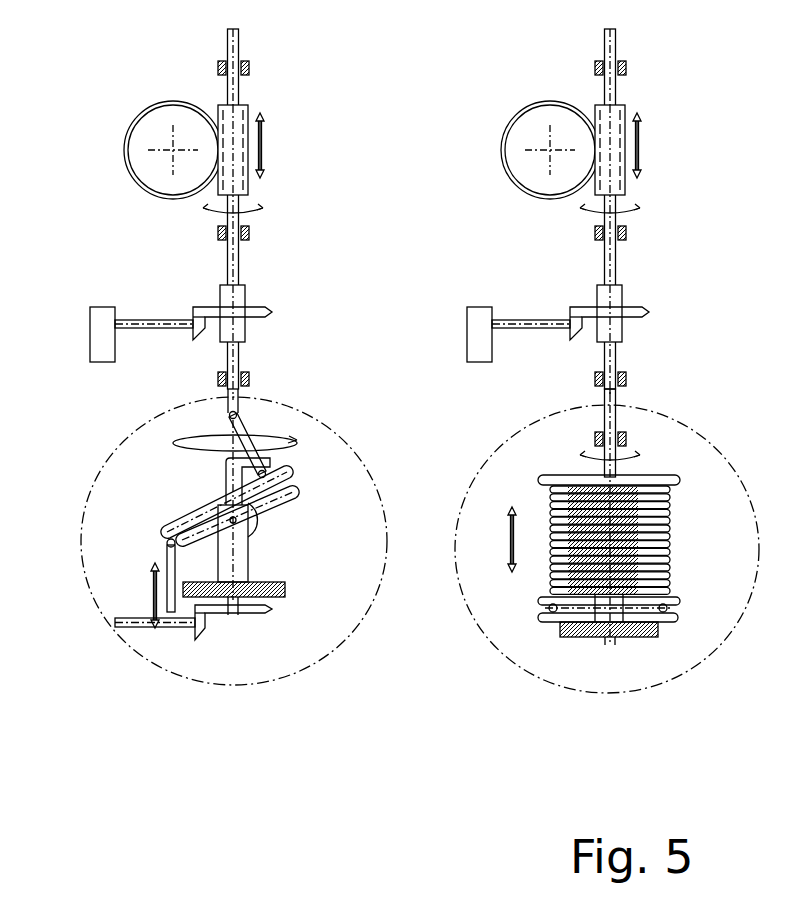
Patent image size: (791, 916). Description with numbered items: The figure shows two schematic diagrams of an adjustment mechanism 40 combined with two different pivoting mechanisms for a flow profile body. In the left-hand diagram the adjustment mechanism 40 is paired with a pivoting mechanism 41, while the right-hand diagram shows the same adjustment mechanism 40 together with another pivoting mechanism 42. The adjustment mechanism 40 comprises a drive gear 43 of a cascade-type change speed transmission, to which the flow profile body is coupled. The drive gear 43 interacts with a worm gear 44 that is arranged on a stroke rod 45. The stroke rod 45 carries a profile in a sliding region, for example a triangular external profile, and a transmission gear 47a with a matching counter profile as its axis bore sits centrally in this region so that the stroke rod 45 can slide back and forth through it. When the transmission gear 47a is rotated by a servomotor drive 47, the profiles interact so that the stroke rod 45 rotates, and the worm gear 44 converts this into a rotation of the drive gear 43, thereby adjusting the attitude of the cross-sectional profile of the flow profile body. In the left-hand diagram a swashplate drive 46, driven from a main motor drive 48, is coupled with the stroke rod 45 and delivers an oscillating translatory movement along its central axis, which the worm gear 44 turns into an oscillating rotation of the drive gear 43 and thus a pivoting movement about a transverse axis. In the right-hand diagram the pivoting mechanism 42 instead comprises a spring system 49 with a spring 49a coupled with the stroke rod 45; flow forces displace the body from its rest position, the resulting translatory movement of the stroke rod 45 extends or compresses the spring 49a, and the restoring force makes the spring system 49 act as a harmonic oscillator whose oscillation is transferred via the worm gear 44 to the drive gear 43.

The adjustment mechanism 40 is at (162, 248).
The pivoting mechanism 41 is at (132, 513).
The pivoting mechanism 42 is at (543, 655).
The drive gear 43 is at (155, 130).
The worm gear 44 is at (245, 112).
The stroke rod 45 is at (237, 250).
The swashplate drive 46 is at (277, 418).
The servomotor drive 47 is at (107, 342).
The transmission gear 47a is at (240, 312).
The main motor drive 48 is at (130, 623).
The spring system 49 is at (678, 597).
The spring 49a is at (667, 525).